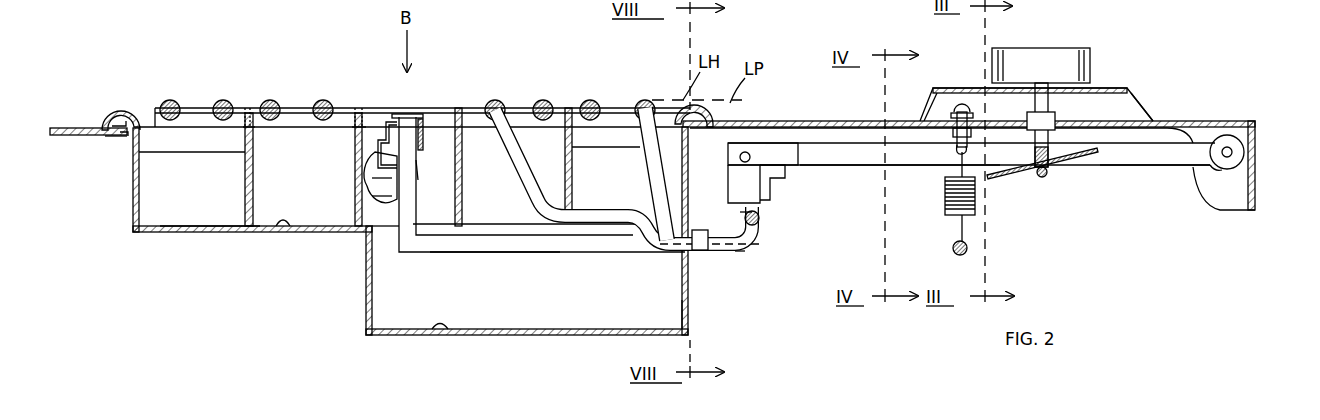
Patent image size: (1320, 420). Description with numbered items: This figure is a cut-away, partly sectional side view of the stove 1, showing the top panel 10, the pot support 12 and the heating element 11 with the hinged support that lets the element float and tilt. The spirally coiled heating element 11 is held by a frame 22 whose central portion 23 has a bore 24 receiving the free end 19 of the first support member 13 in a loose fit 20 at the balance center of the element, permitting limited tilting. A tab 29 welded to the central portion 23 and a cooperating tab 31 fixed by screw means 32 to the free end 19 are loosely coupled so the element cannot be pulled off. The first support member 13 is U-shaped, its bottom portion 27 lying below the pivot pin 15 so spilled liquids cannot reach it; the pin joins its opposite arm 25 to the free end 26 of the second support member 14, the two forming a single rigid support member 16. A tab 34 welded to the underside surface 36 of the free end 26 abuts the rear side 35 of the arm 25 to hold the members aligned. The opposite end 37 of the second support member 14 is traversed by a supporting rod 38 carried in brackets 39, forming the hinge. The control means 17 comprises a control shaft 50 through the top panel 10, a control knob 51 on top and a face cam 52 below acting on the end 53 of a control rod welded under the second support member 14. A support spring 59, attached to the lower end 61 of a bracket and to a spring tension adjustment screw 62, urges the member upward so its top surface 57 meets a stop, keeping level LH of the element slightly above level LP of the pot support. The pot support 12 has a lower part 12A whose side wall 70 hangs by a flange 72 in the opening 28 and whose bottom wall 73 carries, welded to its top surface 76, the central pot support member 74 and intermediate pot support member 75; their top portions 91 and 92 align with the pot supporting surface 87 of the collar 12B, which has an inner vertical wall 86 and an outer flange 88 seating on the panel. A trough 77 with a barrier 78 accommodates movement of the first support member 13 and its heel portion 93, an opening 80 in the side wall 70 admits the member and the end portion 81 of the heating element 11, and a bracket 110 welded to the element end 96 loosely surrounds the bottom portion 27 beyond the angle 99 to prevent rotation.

The stove 1 is at (1188, 54).
The top panel 10 is at (1216, 120).
The heating element 11 is at (540, 101).
The pot support 12 is at (110, 110).
The lower part of pot support 12A is at (251, 106).
The pot support collar 12B is at (130, 112).
The first horizontally disposed heating element support member 13 is at (460, 256).
The second horizontally disposed support member 14 is at (1093, 166).
The pivot pin 15 is at (740, 157).
The single rigid horizontally disposed support member 16 is at (1135, 166).
The control means 17 is at (1099, 42).
The free end of first support member 19 is at (399, 242).
The loose fit 20 is at (419, 181).
The frame 22 is at (292, 127).
The central portion 23 is at (421, 122).
The bore 24 is at (422, 151).
The opposite arm 25 is at (728, 181).
The free end of second support member 26 is at (860, 167).
The bottom portion 27 is at (508, 256).
The opening 28 is at (125, 139).
The tab 29 is at (375, 160).
The cooperating tab 31 is at (372, 178).
The screw means 32 is at (372, 198).
The tab 34 is at (776, 186).
The rear side 35 is at (760, 218).
The underside surface 36 is at (905, 167).
The opposite end 37 is at (1168, 166).
The supporting rod 38 is at (1234, 151).
The brackets 39 is at (1226, 169).
The control shaft 50 is at (1050, 102).
The control knob 51 is at (1042, 58).
The face cam 52 is at (1005, 183).
The control rod end 53 is at (1045, 178).
The top surface 57 is at (822, 122).
The support spring 59 is at (945, 212).
The lower end of bracket 61 is at (968, 247).
The spring tension adjustment screw 62 is at (968, 110).
The circular side wall 70 is at (133, 186).
The outwardly extending flange 72 is at (110, 133).
The bottom wall 73 is at (207, 232).
The central pot support member 74 is at (357, 108).
The intermediate pot support member 75 is at (571, 104).
The top surface of bottom wall 76 is at (283, 232).
The trough 77 is at (440, 331).
The barrier 78 is at (688, 320).
The opening in side-wall 80 is at (692, 294).
The end portion of heating element 81 is at (668, 251).
The inner vertical wall 86 is at (198, 153).
The pot supporting surface 87 is at (124, 110).
The outwardly and downwardly extending flange 88 is at (100, 120).
The top portion of central pot support member 91 is at (361, 110).
The top portion of intermediate pot support member 92 is at (256, 112).
The heel portion 93 is at (764, 248).
The heating element end 96 is at (715, 252).
The angle 99 is at (740, 226).
The bracket 110 is at (700, 251).